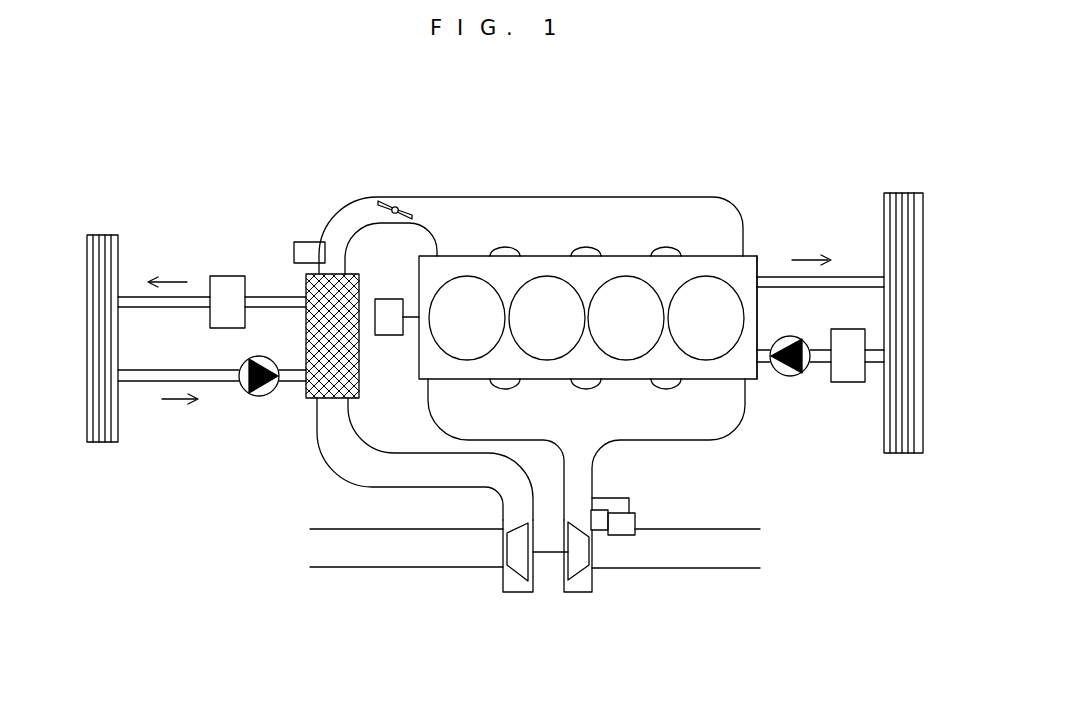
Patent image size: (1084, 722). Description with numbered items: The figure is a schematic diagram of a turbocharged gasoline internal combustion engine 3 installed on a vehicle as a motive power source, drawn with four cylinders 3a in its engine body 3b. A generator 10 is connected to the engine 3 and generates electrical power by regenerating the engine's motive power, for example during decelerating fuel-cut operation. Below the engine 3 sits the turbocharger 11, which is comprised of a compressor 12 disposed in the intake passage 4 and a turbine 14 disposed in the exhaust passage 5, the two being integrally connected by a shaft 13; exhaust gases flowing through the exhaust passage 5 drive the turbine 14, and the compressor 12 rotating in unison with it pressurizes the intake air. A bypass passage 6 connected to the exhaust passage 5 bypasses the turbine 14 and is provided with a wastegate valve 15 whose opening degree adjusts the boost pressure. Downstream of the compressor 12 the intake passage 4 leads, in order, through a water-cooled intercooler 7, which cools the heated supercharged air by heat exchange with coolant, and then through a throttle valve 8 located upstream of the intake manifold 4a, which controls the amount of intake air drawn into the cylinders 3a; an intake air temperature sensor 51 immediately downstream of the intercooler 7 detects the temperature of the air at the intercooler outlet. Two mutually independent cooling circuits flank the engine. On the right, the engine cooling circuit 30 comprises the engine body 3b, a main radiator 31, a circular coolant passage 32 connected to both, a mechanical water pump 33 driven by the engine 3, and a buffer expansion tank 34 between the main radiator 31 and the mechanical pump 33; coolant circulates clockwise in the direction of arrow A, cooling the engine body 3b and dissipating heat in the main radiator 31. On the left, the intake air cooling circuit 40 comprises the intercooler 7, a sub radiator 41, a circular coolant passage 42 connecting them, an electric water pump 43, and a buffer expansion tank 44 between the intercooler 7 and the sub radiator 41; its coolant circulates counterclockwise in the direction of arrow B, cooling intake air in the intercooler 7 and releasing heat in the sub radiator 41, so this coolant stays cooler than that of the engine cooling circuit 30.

The internal combustion engine 3 is at (623, 237).
The cylinders 3a is at (548, 276).
The engine body 3b is at (758, 302).
The intake passage 4 is at (346, 568).
The intake manifold 4a is at (557, 197).
The exhaust passage 5 is at (732, 529).
The bypass passage 6 is at (632, 498).
The intercooler 7 is at (359, 355).
The throttle valve 8 is at (398, 203).
The generator 10 is at (388, 299).
The turbocharger 11 is at (537, 609).
The compressor 12 is at (503, 580).
The shaft 13 is at (548, 554).
The turbine 14 is at (592, 575).
The wastegate valve 15 is at (637, 515).
The engine cooling circuit 30 is at (866, 286).
The main radiator 31 is at (923, 232).
The coolant passage 32 is at (860, 277).
The mechanical water pump 33 is at (783, 376).
The buffer expansion tank 34 is at (848, 382).
The intake air cooling circuit 40 is at (182, 310).
The sub radiator 41 is at (86, 295).
The coolant passage 42 is at (148, 382).
The electric water pump 43 is at (265, 397).
The buffer expansion tank 44 is at (228, 276).
The intake air temperature sensor 51 is at (310, 242).